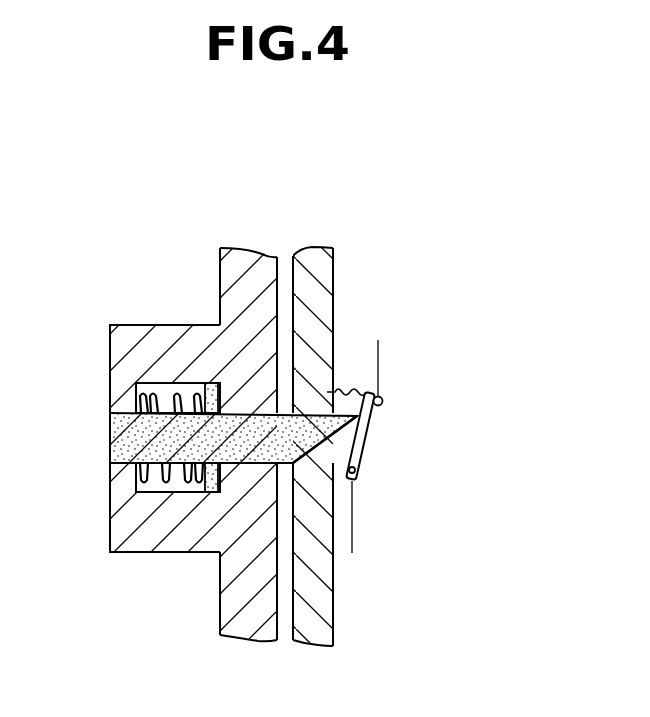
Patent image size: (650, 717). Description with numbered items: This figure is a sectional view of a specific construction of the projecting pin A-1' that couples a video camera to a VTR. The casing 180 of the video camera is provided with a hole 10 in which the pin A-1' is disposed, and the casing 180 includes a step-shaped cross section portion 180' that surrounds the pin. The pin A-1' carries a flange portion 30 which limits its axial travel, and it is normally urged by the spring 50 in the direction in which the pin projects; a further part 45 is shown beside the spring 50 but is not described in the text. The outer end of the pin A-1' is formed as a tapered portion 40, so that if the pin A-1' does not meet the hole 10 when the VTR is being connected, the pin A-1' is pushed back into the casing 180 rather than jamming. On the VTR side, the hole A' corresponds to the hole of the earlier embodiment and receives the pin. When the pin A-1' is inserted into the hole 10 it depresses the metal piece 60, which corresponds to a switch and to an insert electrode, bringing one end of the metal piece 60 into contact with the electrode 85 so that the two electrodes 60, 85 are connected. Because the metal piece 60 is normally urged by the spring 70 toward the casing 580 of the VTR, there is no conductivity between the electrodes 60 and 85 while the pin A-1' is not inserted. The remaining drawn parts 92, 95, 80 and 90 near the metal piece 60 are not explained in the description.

The casing 580 is at (323, 277).
The casing 180 is at (268, 405).
The step-shaped cross section portion 180' is at (124, 437).
The hole 10 is at (262, 413).
The tapered portion 40 is at (323, 447).
The flange portion 30 is at (212, 385).
The spring 50 is at (162, 481).
The spring seat 45 is at (180, 486).
The projecting pin A-1' is at (313, 393).
The hole A' is at (317, 492).
The spring 70 is at (355, 391).
The metal piece 60 is at (367, 410).
The pivot pin 95 is at (382, 399).
The wire 92 is at (381, 345).
The pin 80 is at (355, 473).
The electrode 85 is at (356, 484).
The cable 90 is at (353, 542).